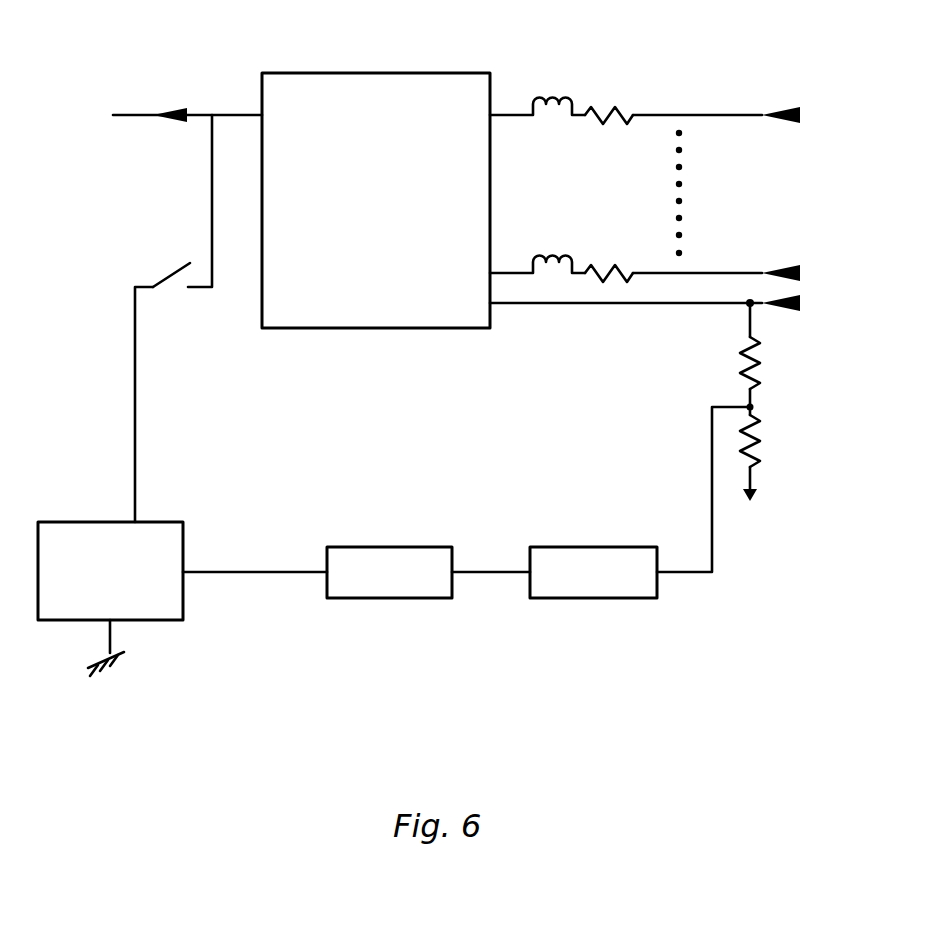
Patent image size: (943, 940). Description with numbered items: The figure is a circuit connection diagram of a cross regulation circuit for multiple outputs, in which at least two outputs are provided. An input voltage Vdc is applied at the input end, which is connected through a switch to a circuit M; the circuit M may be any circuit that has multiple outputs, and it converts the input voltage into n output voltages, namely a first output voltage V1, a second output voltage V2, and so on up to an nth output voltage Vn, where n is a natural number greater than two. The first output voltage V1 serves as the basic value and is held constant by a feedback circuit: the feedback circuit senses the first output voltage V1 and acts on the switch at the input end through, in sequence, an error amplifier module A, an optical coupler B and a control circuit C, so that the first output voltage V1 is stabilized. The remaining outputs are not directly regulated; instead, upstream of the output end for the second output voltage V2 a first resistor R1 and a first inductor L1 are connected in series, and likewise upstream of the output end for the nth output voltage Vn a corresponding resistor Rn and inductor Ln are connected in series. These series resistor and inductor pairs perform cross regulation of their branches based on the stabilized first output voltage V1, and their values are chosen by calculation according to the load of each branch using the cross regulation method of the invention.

The input voltage Vdc is at (168, 114).
The circuit M is at (376, 200).
The first inductor Ln is at (556, 97).
The first resistor Rn is at (607, 107).
The first inductor L1 is at (556, 254).
The first resistor R1 is at (607, 262).
The nth output voltage Vn is at (733, 117).
The second output voltage V2 is at (733, 275).
The first output voltage V1 is at (662, 305).
The control circuit C is at (182, 599).
The optical coupler B is at (428, 572).
The error amplifier module A is at (593, 572).